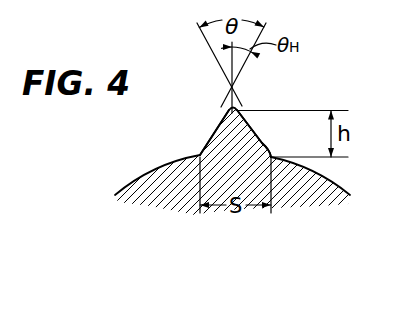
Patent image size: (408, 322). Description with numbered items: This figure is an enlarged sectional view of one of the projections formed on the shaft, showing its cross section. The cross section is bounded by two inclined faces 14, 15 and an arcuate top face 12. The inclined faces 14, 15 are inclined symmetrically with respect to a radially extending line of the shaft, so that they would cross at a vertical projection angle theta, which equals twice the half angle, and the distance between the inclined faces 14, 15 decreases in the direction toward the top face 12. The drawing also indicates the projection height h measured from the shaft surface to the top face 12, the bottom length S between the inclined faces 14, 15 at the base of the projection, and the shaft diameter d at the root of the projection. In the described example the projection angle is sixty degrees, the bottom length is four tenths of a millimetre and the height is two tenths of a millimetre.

The top face 12 is at (235, 107).
The inclined face 14 is at (215, 134).
The inclined face 15 is at (254, 130).
The diameter of cylindrical surface d is at (145, 175).